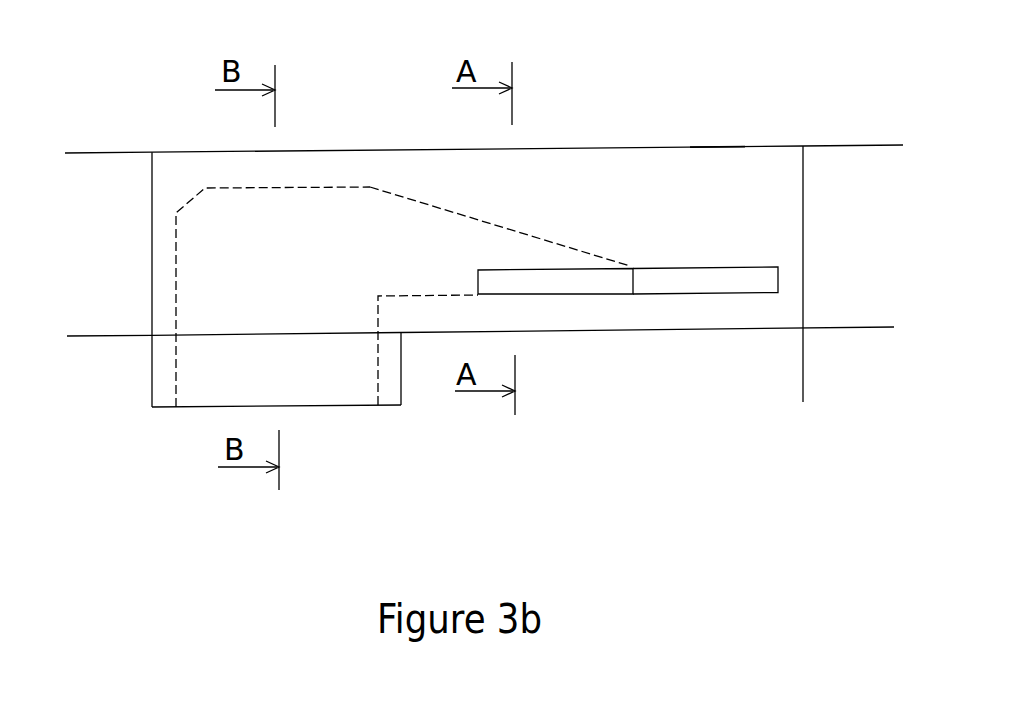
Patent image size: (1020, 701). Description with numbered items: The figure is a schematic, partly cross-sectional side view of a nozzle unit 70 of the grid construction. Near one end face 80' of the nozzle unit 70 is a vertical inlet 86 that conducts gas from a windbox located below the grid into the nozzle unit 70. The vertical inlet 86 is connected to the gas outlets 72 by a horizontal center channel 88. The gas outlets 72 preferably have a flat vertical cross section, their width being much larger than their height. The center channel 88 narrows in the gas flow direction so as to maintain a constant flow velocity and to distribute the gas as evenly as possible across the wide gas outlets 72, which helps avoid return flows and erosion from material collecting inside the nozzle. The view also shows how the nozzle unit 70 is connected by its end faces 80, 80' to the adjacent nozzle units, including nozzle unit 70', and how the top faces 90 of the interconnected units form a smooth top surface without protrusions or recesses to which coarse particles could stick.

The nozzle unit 70 is at (477, 89).
The adjacent nozzle unit 70' is at (93, 98).
The top face 90 is at (717, 146).
The end face 80 is at (660, 274).
The end face 80' is at (90, 296).
The vertical inlet 86 is at (330, 385).
The horizontal center channel 88 is at (443, 230).
The gas outlets 72 is at (687, 282).